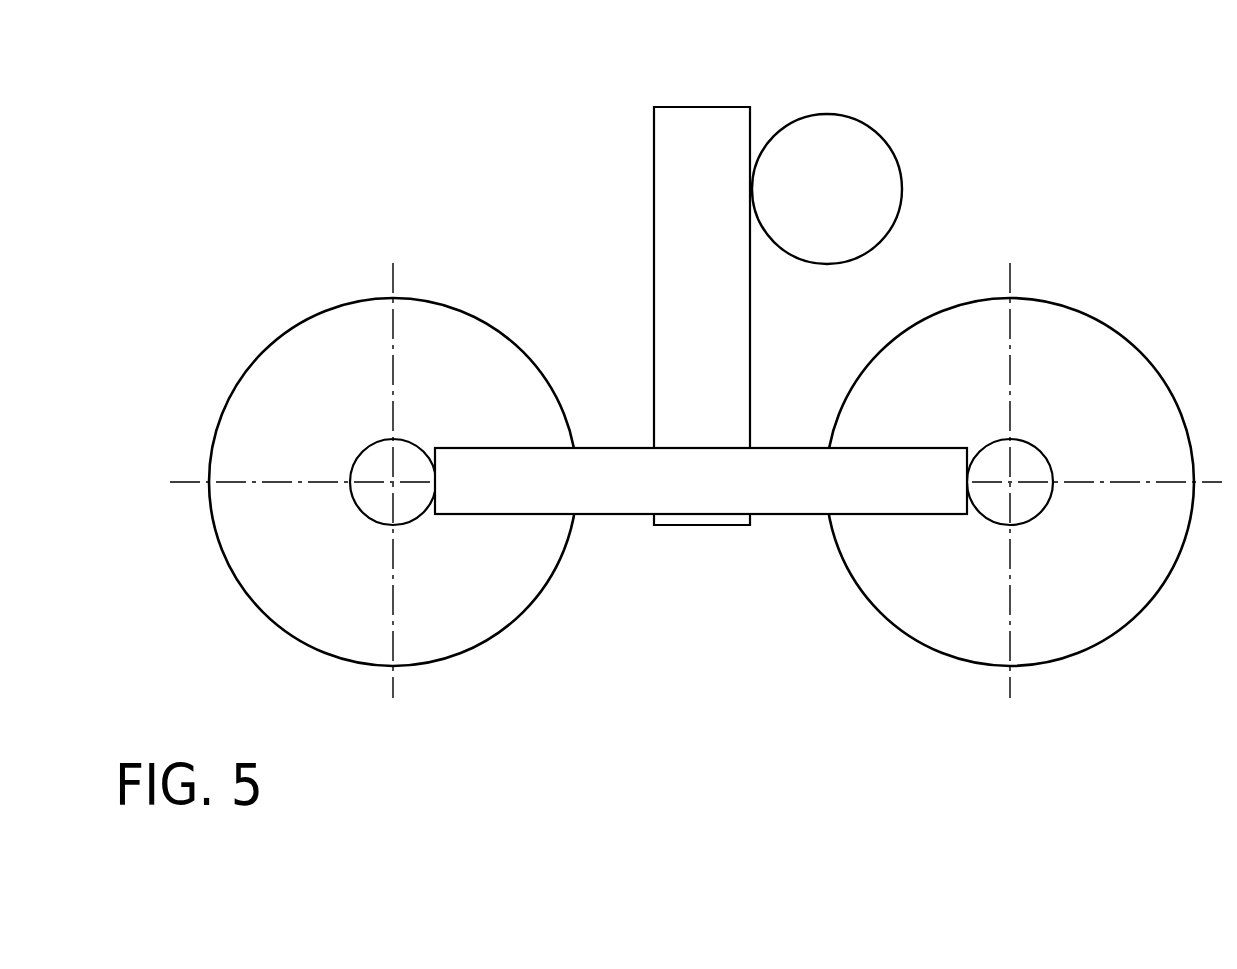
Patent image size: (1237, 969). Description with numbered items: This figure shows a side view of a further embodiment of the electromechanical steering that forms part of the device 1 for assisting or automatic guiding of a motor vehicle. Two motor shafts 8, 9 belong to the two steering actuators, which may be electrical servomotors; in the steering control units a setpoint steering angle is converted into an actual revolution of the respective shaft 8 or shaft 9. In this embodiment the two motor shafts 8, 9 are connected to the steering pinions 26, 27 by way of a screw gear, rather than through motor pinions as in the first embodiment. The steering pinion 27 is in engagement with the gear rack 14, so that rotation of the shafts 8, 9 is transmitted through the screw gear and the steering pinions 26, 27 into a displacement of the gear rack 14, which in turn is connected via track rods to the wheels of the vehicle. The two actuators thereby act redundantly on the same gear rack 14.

The device 1 is at (950, 78).
The shaft 8 is at (1075, 608).
The shaft 9 is at (451, 623).
The gear rack 14 is at (818, 134).
The steering pinion 26 is at (604, 500).
The steering pinion 27 is at (684, 255).